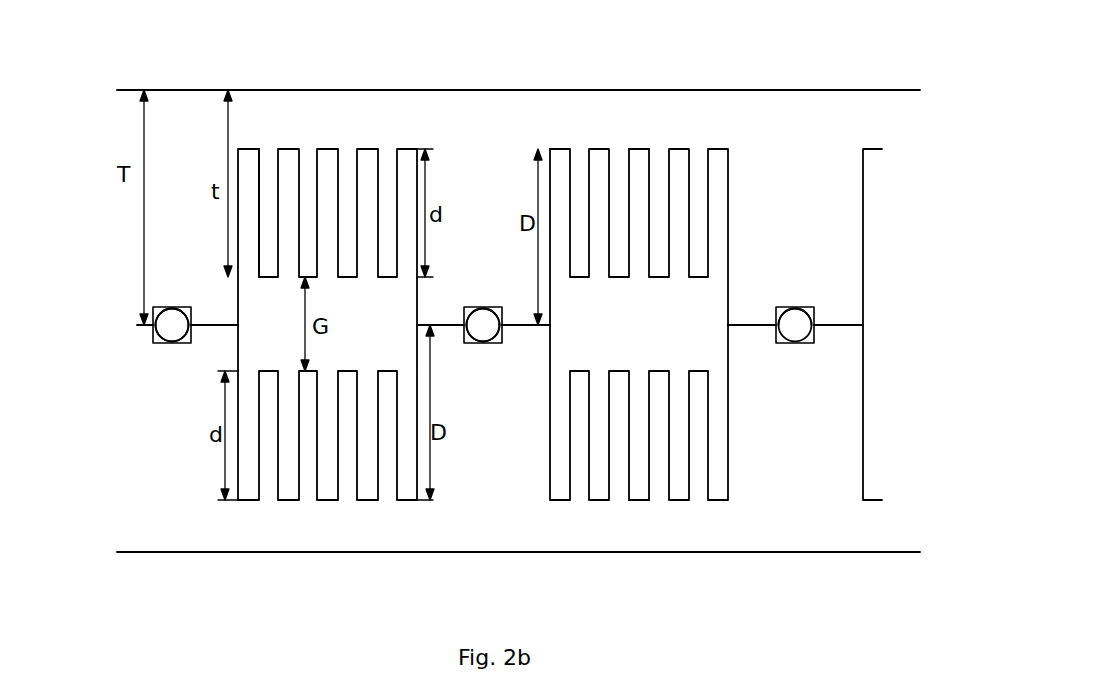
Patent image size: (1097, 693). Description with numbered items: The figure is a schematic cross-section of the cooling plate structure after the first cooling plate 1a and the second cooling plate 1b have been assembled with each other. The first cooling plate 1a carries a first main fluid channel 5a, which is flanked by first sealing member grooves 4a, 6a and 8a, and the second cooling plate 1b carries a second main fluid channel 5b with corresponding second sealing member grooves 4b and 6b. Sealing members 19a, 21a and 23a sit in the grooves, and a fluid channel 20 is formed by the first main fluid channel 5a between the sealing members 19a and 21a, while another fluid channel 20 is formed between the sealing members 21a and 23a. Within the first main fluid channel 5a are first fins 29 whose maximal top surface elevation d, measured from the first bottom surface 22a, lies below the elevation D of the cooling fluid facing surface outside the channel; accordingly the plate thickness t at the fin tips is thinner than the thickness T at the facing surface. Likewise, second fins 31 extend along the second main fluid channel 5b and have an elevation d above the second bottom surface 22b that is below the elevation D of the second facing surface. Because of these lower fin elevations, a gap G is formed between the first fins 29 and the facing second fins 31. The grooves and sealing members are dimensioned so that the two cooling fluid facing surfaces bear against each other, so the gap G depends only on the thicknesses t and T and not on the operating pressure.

The first cooling plate 1a is at (812, 72).
The second cooling plate 1b is at (203, 560).
The first fins 29 is at (258, 206).
The second fins 31 is at (297, 447).
The first main fluid channel 5a is at (715, 213).
The second main fluid channel 5b is at (600, 435).
The first bottom surface 22a is at (640, 155).
The second bottom surface 22b is at (640, 500).
The fluid channel 20 is at (272, 310).
The sealing member 19a is at (163, 345).
The first sealing member groove 4a is at (167, 307).
The second sealing member groove 4b is at (186, 345).
The sealing member 21a is at (483, 327).
The first sealing member groove 6a is at (465, 308).
The second sealing member groove 6b is at (480, 337).
The sealing member 23a is at (797, 337).
The first sealing member groove 8a is at (812, 306).